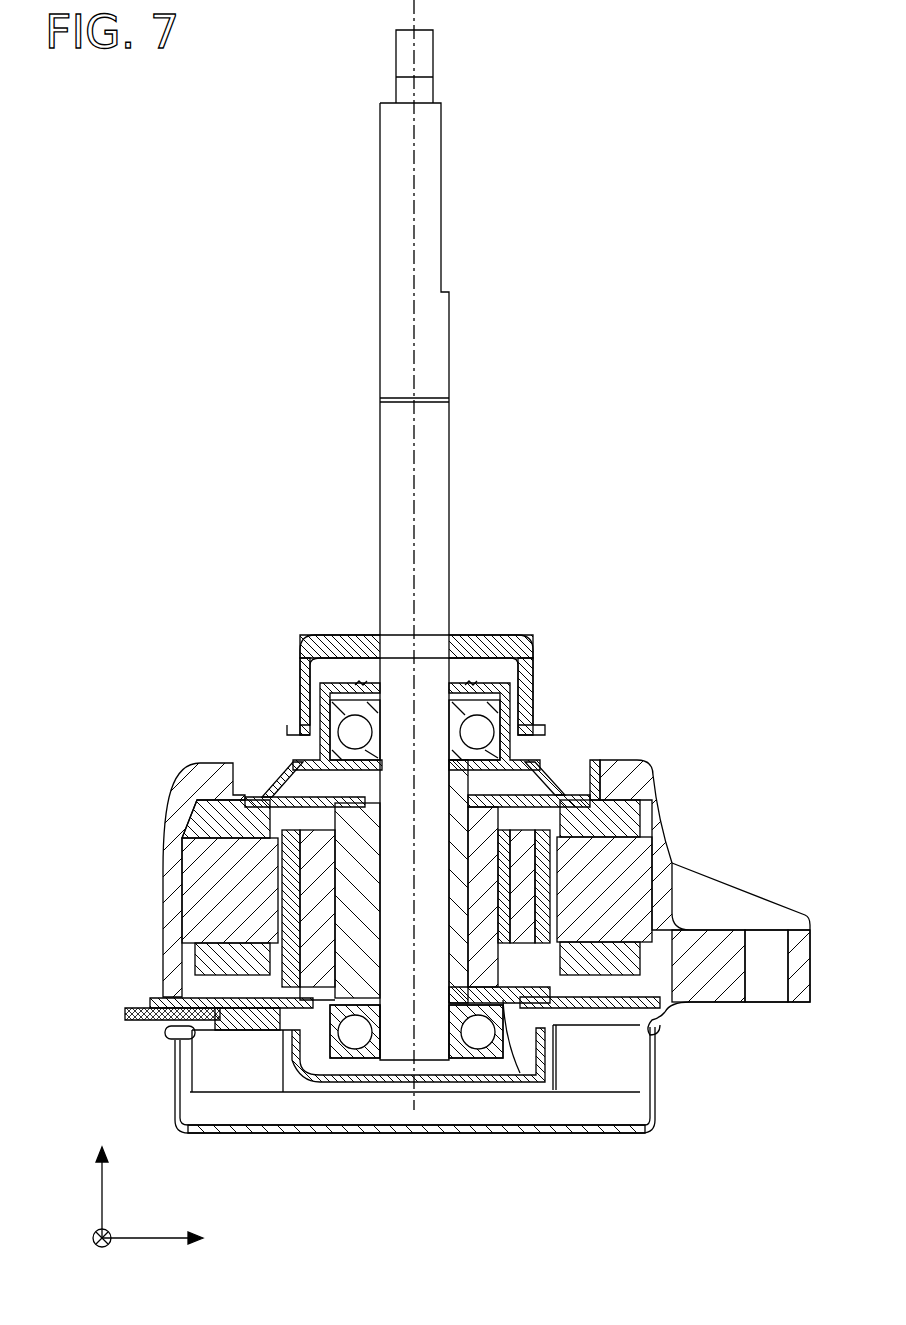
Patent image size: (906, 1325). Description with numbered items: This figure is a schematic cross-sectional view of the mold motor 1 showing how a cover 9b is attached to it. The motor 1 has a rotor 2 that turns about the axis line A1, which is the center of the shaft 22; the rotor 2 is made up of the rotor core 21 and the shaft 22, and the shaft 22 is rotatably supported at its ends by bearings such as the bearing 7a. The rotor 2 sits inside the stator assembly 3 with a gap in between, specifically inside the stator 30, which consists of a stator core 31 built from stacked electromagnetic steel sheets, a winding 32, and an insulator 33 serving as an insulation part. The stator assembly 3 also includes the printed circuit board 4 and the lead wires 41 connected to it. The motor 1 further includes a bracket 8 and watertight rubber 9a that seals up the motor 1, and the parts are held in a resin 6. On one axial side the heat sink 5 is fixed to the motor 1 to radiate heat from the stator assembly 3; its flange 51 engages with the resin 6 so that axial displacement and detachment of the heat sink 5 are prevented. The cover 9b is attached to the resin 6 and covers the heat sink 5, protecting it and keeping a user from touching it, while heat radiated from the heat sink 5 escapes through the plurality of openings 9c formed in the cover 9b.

The motor 1 is at (229, 130).
The axis line A1 is at (410, 168).
The shaft 22 is at (398, 340).
The watertight rubber 9a is at (345, 650).
The bearing 7a is at (335, 717).
The bracket 8 is at (293, 760).
The rotor 2 is at (520, 822).
The rotor core 21 is at (485, 880).
The stator assembly 3 is at (48, 810).
The stator 30 is at (96, 787).
The stator core 31 is at (195, 857).
The winding 32 is at (205, 825).
The insulator 33 is at (210, 805).
The printed circuit board 4 is at (200, 995).
The lead wires 41 is at (138, 1020).
The resin 6 is at (200, 768).
The flange 51 is at (658, 1025).
The heat sink 5 is at (555, 1092).
The cover 9b is at (443, 1135).
The openings 9c is at (240, 1133).